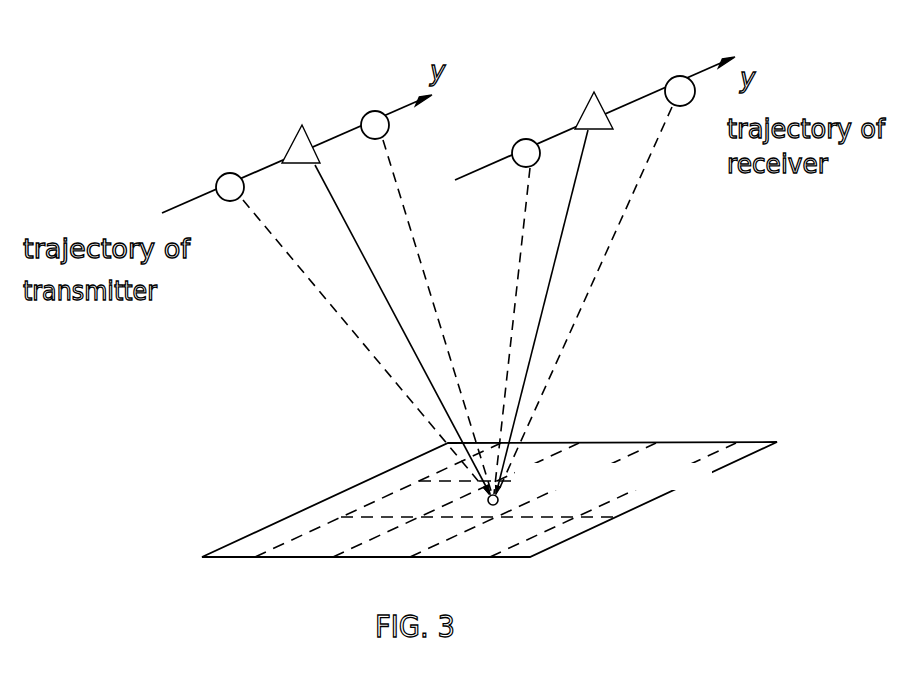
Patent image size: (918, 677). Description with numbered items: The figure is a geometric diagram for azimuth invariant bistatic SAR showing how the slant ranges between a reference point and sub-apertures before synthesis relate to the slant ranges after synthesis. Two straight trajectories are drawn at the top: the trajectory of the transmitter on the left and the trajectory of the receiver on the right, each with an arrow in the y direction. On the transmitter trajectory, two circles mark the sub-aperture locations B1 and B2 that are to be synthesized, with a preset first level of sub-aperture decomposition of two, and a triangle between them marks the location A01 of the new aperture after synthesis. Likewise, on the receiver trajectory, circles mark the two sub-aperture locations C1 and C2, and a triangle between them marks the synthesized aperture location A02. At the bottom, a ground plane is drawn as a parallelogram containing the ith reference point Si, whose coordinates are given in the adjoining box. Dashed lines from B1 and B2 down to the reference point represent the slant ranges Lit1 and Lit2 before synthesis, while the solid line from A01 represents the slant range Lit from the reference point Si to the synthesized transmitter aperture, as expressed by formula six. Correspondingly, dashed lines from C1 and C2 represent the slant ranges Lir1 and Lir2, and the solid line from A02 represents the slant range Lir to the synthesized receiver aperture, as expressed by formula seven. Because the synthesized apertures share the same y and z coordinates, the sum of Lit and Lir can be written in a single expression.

The first transmitter sub-aperture location B1 is at (197, 138).
The synthesized transmitter aperture location A01 is at (273, 101).
The second transmitter sub-aperture location B2 is at (360, 75).
The first receiver sub-aperture location C1 is at (492, 104).
The synthesized receiver aperture location A02 is at (566, 58).
The second receiver sub-aperture location C2 is at (656, 40).
The slant range from reference point to synthesized transmitter aperture Lit is at (389, 329).
The slant range from reference point to first transmitter sub-aperture Lit1 is at (366, 347).
The slant range from reference point to second transmitter sub-aperture Lit2 is at (437, 317).
The slant range from reference point to synthesized receiver aperture Lir is at (559, 312).
The slant range from reference point to first receiver sub-aperture Lir1 is at (498, 331).
The slant range from reference point to second receiver sub-aperture Lir2 is at (584, 300).
The reference point Si is at (657, 511).